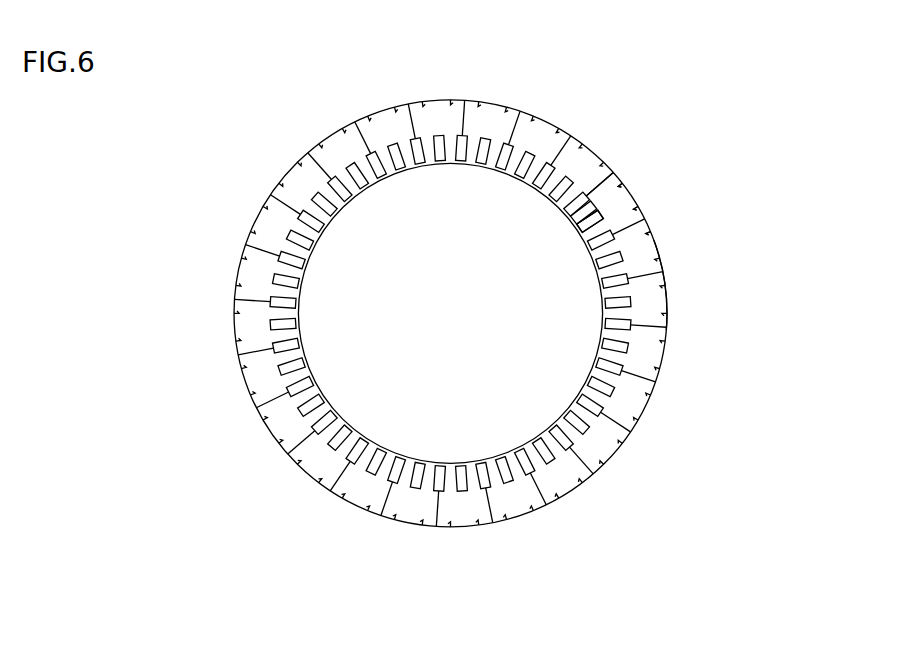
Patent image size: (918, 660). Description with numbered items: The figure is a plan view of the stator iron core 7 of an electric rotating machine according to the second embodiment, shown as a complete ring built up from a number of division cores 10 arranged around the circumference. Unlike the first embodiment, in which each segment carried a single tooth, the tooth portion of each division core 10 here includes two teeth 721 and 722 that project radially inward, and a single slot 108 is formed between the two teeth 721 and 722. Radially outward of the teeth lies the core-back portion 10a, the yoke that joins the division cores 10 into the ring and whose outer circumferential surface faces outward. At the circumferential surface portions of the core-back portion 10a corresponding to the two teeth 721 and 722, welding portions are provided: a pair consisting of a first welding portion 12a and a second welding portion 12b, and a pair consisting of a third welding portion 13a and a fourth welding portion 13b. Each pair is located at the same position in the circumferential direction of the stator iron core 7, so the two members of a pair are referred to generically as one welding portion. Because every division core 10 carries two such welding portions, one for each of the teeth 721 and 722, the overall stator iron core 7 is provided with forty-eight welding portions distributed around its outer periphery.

The stator iron core 7 is at (302, 170).
The division core 10 is at (573, 160).
The core-back portion 10a is at (661, 257).
The first welding portion 12a is at (618, 183).
The second welding portion 12b is at (621, 185).
The third welding portion 13a is at (636, 207).
The fourth welding portion 13b is at (649, 234).
The tooth 721 is at (577, 214).
The slot 108 is at (597, 198).
The tooth 722 is at (607, 198).